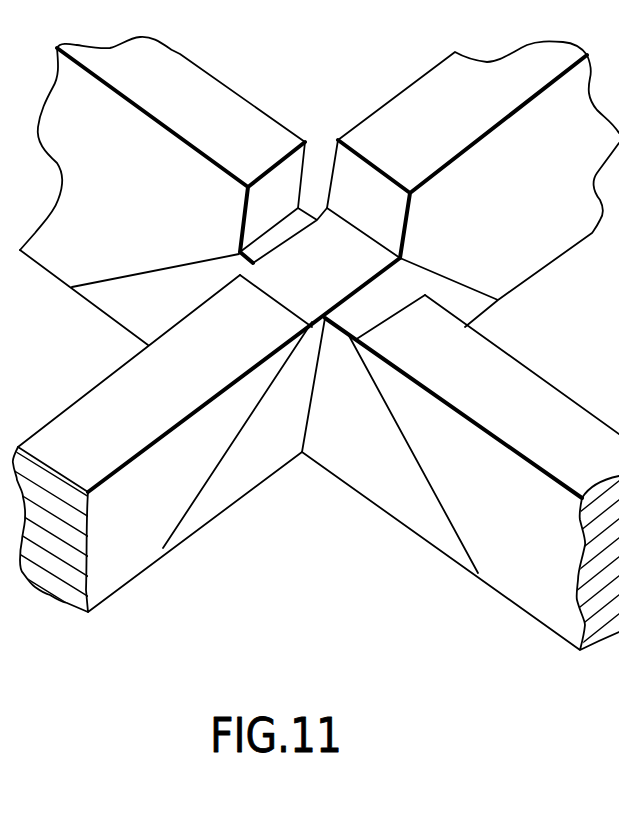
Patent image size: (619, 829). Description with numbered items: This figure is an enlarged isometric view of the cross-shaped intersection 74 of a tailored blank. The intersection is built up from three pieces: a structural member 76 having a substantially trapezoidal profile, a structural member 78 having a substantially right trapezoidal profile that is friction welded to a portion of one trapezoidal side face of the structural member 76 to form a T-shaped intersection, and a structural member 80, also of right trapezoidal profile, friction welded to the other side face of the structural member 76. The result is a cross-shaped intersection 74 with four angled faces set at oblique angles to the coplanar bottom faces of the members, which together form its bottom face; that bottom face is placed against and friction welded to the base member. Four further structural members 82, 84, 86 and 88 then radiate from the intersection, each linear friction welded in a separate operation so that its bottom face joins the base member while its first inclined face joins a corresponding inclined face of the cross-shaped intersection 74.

The cross-shaped intersection 74 is at (297, 500).
The structural member 76 is at (316, 265).
The structural member 78 is at (377, 477).
The structural member 80 is at (125, 302).
The structural member 82 is at (208, 88).
The structural member 84 is at (518, 388).
The structural member 86 is at (418, 97).
The structural member 88 is at (128, 555).